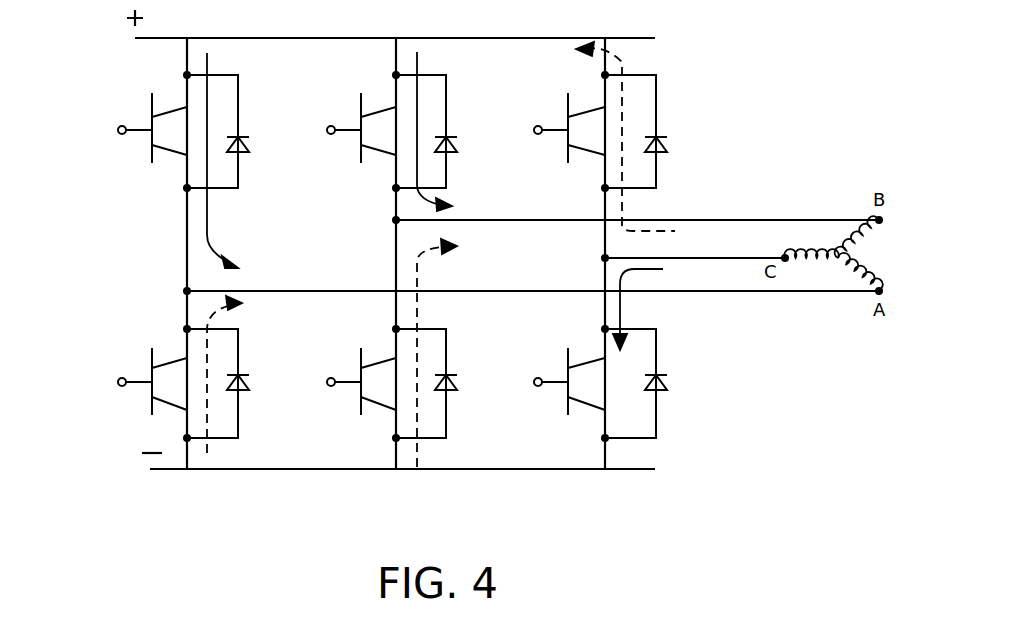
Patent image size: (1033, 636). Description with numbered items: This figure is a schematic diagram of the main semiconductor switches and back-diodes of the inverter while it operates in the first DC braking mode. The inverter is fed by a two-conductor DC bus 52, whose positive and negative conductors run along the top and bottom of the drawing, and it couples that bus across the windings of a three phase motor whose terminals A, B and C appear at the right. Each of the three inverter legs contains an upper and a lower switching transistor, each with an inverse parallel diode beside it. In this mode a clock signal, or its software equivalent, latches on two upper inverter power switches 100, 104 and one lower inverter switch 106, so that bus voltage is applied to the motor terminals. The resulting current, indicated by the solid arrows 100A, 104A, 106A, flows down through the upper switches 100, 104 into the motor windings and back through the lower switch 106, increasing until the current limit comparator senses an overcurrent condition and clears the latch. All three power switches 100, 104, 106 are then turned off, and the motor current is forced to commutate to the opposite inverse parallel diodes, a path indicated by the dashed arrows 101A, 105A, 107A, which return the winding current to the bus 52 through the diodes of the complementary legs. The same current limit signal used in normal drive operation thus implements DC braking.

The two-conductor DC bus 52 is at (155, 479).
The upper inverter power switch 100 is at (152, 150).
The upper inverter power switch 104 is at (361, 150).
The lower inverter switch 106 is at (568, 355).
The solid arrow 100A is at (209, 55).
The solid arrow 104A is at (419, 55).
The dashed arrow 101A is at (624, 60).
The dashed arrow 105A is at (214, 318).
The dashed arrow 107A is at (419, 320).
The solid arrow 106A is at (620, 310).